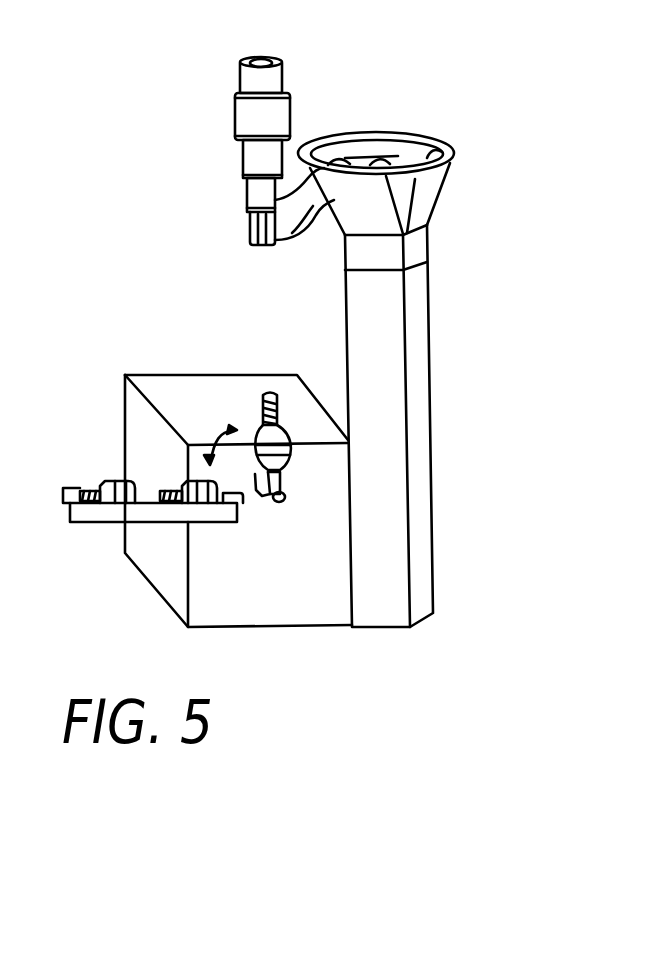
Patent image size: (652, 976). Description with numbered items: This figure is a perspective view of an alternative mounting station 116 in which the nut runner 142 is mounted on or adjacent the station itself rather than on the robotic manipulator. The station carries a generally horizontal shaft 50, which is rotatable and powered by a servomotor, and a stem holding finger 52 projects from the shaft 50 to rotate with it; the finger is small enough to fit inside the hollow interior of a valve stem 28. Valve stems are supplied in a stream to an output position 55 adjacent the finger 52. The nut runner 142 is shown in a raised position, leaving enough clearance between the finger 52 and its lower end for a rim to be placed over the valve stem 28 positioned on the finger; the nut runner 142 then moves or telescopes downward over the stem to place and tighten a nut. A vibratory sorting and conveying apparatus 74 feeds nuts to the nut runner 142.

The mounting station 116 is at (203, 238).
The nut runner 142 is at (258, 132).
The vibratory sorting and conveying apparatus 74 is at (425, 205).
The valve stem 28 is at (307, 413).
The stem holding finger 52 is at (285, 478).
The shaft 50 is at (268, 498).
The output position 55 is at (243, 497).